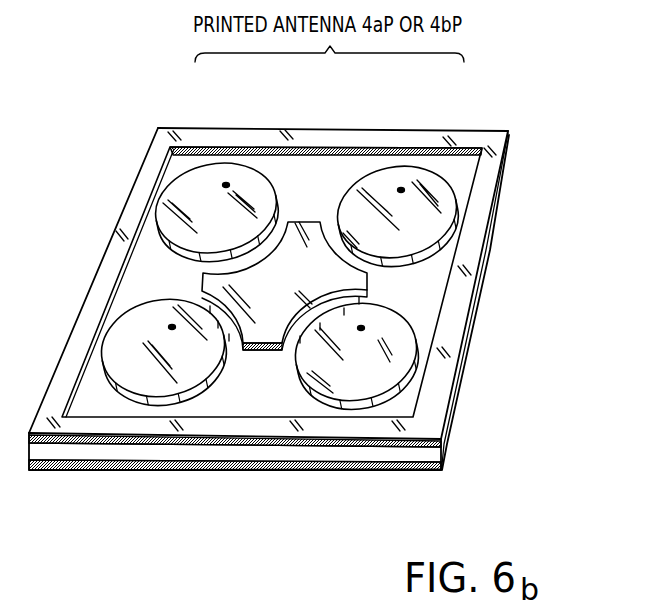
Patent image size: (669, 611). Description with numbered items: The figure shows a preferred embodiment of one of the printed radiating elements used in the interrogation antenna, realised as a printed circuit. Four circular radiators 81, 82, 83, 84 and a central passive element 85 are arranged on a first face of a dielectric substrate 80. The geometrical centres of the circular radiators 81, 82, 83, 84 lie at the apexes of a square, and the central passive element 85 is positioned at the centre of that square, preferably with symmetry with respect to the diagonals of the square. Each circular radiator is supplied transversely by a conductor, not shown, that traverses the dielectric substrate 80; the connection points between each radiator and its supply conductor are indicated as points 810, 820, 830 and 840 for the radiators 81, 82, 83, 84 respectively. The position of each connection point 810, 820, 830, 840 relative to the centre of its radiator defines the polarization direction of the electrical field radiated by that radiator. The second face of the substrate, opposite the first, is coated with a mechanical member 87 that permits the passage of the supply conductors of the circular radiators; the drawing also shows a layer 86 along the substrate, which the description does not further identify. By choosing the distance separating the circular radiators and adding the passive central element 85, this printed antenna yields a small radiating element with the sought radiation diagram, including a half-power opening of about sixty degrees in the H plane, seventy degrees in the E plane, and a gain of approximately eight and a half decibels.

The dielectric substrate 80 is at (225, 452).
The circular radiator 81 is at (185, 190).
The circular radiator 82 is at (440, 187).
The circular radiator 83 is at (400, 350).
The circular radiator 84 is at (127, 340).
The central passive element 85 is at (284, 293).
The upper conductive layer 86 is at (153, 441).
The mechanical member 87 is at (293, 468).
The connection point 810 is at (226, 182).
The connection point 820 is at (402, 188).
The connection point 830 is at (362, 327).
The connection point 840 is at (170, 327).